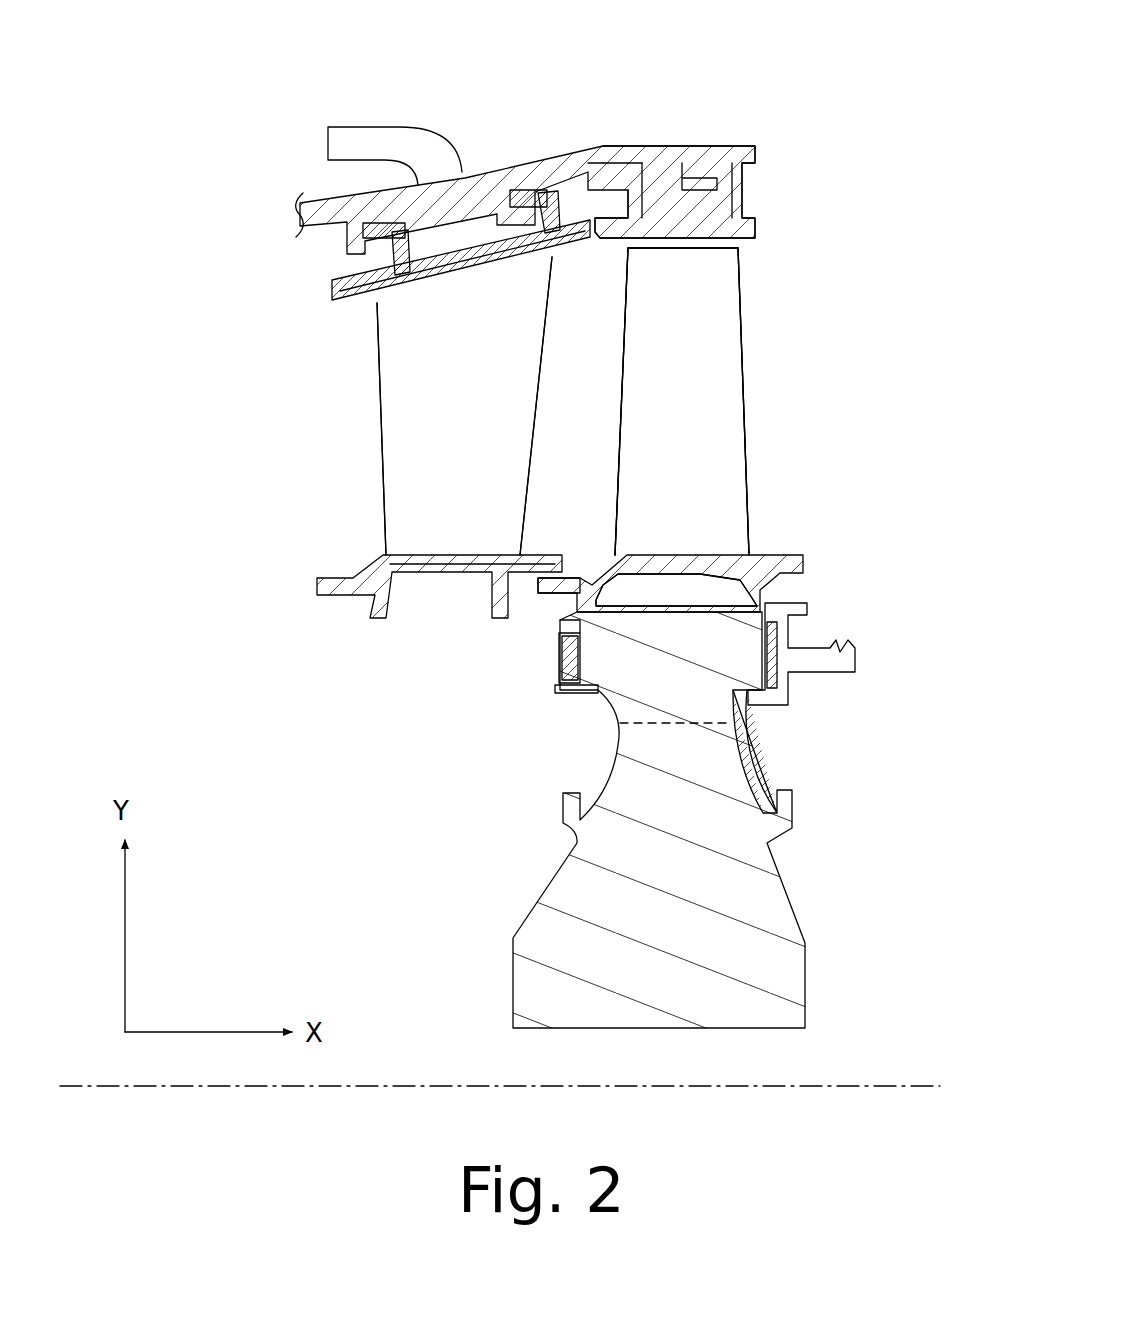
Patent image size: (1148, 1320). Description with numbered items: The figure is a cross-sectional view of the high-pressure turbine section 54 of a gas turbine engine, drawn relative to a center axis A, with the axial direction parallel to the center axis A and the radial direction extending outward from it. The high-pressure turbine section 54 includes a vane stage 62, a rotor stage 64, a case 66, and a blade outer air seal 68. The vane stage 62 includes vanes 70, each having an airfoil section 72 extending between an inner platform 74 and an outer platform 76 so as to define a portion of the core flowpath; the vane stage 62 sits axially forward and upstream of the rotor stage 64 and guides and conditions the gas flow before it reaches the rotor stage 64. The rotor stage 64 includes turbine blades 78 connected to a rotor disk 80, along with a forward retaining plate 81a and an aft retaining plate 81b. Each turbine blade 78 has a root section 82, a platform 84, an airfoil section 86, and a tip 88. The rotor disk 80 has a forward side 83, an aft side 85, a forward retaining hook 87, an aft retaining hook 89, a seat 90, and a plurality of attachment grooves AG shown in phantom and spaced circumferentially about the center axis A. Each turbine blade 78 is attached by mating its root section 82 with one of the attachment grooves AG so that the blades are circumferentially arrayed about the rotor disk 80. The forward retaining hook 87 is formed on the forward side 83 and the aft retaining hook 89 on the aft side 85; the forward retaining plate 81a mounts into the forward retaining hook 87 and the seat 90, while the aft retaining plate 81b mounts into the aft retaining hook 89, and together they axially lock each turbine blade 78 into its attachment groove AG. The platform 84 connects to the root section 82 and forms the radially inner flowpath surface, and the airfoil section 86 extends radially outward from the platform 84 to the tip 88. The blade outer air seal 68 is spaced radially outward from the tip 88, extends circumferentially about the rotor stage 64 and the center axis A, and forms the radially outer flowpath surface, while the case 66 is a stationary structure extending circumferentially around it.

The high-pressure turbine section 54 is at (300, 107).
The vane stage 62 is at (360, 410).
The rotor stage 64 is at (838, 478).
The case 66 is at (580, 148).
The blade outer air seal 68 is at (743, 220).
The vane 70 is at (505, 398).
The airfoil section 72 is at (393, 430).
The inner platform 74 is at (360, 578).
The outer platform 76 is at (338, 290).
The turbine blade 78 is at (748, 425).
The rotor disk 80 is at (763, 912).
The forward retaining plate 81a is at (558, 666).
The aft retaining plate 81b is at (790, 641).
The root section 82 is at (620, 595).
The forward side 83 is at (578, 640).
The platform 84 is at (757, 565).
The aft side 85 is at (772, 668).
The airfoil section 86 is at (668, 435).
The forward retaining hook 87 is at (570, 627).
The tip 88 is at (703, 248).
The aft retaining hook 89 is at (792, 803).
The seat 90 is at (560, 697).
The attachment grooves AG is at (650, 723).
The center axis A is at (877, 1084).